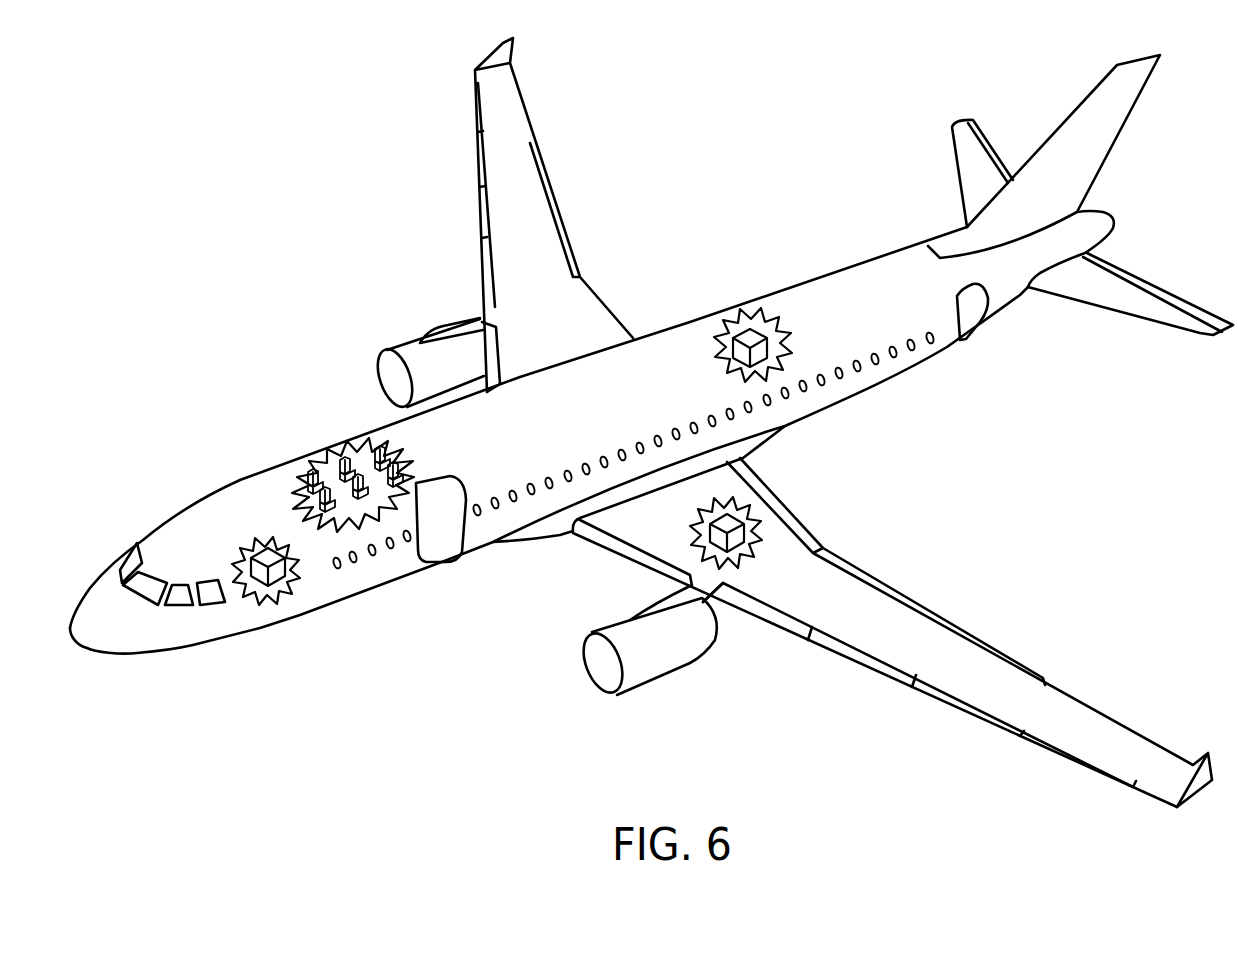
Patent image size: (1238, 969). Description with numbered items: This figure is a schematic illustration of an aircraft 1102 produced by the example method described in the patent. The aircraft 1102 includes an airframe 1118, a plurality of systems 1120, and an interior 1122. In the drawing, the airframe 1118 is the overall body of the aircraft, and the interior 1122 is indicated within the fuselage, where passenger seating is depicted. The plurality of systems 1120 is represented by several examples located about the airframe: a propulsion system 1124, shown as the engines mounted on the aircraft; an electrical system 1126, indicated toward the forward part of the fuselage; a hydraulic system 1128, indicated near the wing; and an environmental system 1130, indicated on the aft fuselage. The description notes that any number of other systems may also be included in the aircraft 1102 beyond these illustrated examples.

The aircraft 1102 is at (300, 167).
The airframe 1118 is at (310, 423).
The plurality of systems 1120 is at (1000, 498).
The interior 1122 is at (312, 478).
The propulsion system 1124 is at (405, 345).
The electrical system 1126 is at (268, 555).
The hydraulic system 1128 is at (737, 518).
The environmental system 1130 is at (745, 335).